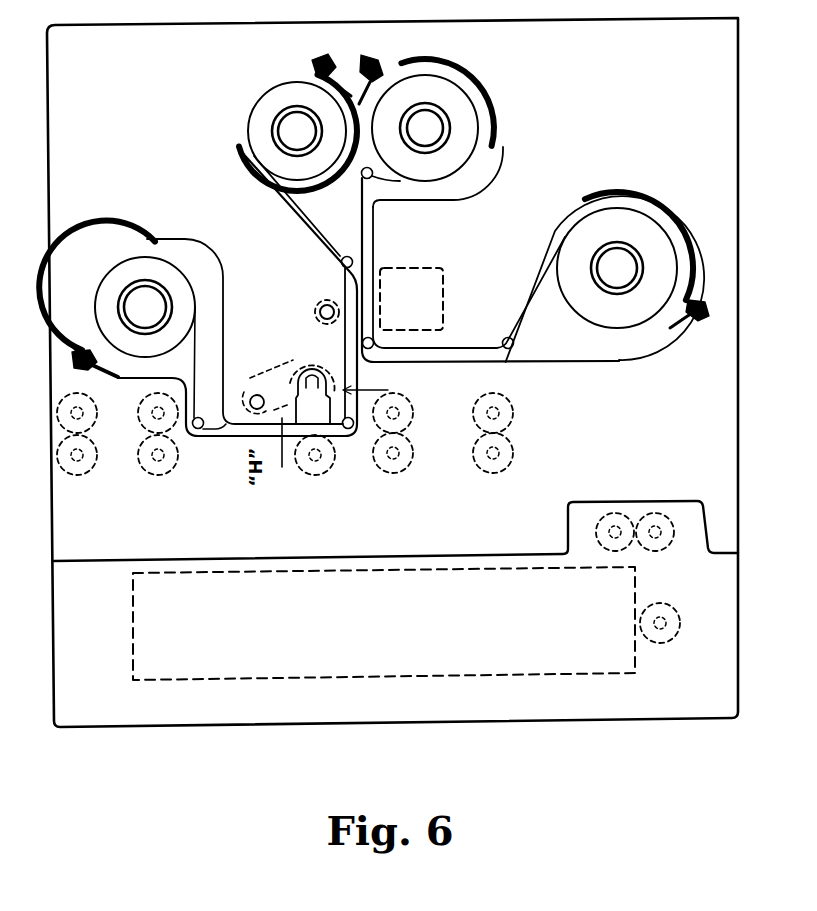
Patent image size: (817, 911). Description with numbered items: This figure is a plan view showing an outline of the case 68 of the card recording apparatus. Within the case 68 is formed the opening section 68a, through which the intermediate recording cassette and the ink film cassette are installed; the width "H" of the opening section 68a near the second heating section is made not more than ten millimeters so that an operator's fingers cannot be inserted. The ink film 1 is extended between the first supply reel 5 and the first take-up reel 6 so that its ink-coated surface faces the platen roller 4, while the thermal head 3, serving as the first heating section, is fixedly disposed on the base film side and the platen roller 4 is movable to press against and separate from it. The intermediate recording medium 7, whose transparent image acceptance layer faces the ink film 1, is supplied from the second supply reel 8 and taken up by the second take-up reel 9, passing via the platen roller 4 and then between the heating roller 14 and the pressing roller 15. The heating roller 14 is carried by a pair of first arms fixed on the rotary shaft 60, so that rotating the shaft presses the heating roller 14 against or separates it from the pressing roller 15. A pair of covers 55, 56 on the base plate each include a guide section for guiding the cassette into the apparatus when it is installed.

The ink film 1 is at (403, 201).
The thermal head 3 is at (378, 298).
The platen roller 4 is at (323, 305).
The first supply reel 5 is at (500, 147).
The first take-up reel 6 is at (647, 219).
The intermediate recording medium 7 is at (303, 209).
The second supply reel 8 is at (243, 152).
The second take-up reel 9 is at (173, 268).
The heating roller 14 is at (302, 368).
The pressing roller 15 is at (316, 470).
The cover 55 is at (253, 89).
The cover 56 is at (110, 244).
The rotary shaft 60 is at (256, 395).
The case 68 is at (722, 243).
The opening section 68a is at (628, 347).